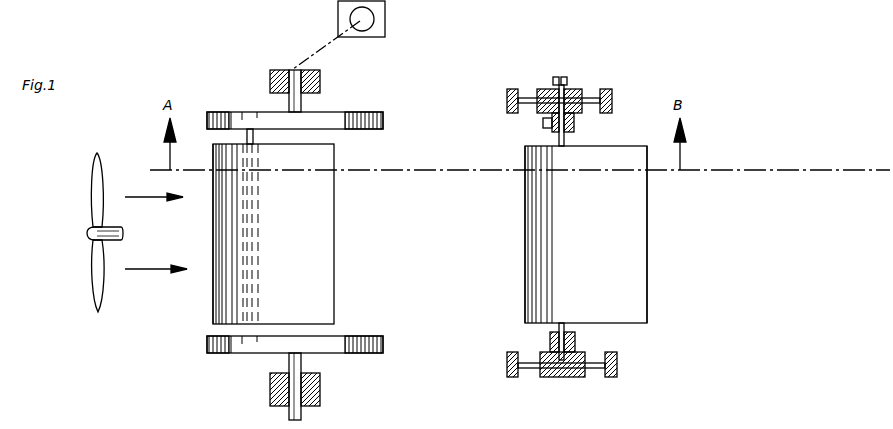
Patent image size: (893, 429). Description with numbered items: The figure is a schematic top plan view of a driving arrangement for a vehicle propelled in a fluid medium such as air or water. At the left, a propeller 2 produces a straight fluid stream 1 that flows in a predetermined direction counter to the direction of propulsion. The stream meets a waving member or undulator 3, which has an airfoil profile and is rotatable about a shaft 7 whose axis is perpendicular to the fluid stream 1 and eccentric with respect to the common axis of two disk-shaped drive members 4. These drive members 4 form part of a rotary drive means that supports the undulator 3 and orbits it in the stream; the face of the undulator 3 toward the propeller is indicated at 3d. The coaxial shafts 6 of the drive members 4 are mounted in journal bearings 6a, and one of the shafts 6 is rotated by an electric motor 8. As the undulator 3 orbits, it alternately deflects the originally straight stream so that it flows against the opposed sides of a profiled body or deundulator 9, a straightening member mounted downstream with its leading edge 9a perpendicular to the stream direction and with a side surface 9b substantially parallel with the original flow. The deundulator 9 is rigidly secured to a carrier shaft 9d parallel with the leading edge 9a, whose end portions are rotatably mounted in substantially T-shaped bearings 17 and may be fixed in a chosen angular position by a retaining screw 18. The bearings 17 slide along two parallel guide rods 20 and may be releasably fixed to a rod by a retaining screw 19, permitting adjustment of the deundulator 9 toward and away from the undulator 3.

The fluid stream 1 is at (158, 268).
The propeller 2 is at (91, 295).
The undulator 3 is at (325, 297).
The end face of first drum 3d is at (213, 297).
The disk-shaped drive members 4 is at (368, 112).
The shafts 6 is at (301, 103).
The journal bearings 6a is at (268, 83).
The shaft 7 is at (247, 136).
The electric motor 8 is at (385, 17).
The deundulator 9 is at (633, 146).
The leading edge 9a is at (525, 297).
The surface 9b is at (637, 297).
The carrier shaft 9d is at (555, 330).
The bearings 17 is at (580, 126).
The retaining screw 18 is at (541, 123).
The retaining screw 19 is at (563, 78).
The guide rods 20 is at (527, 97).